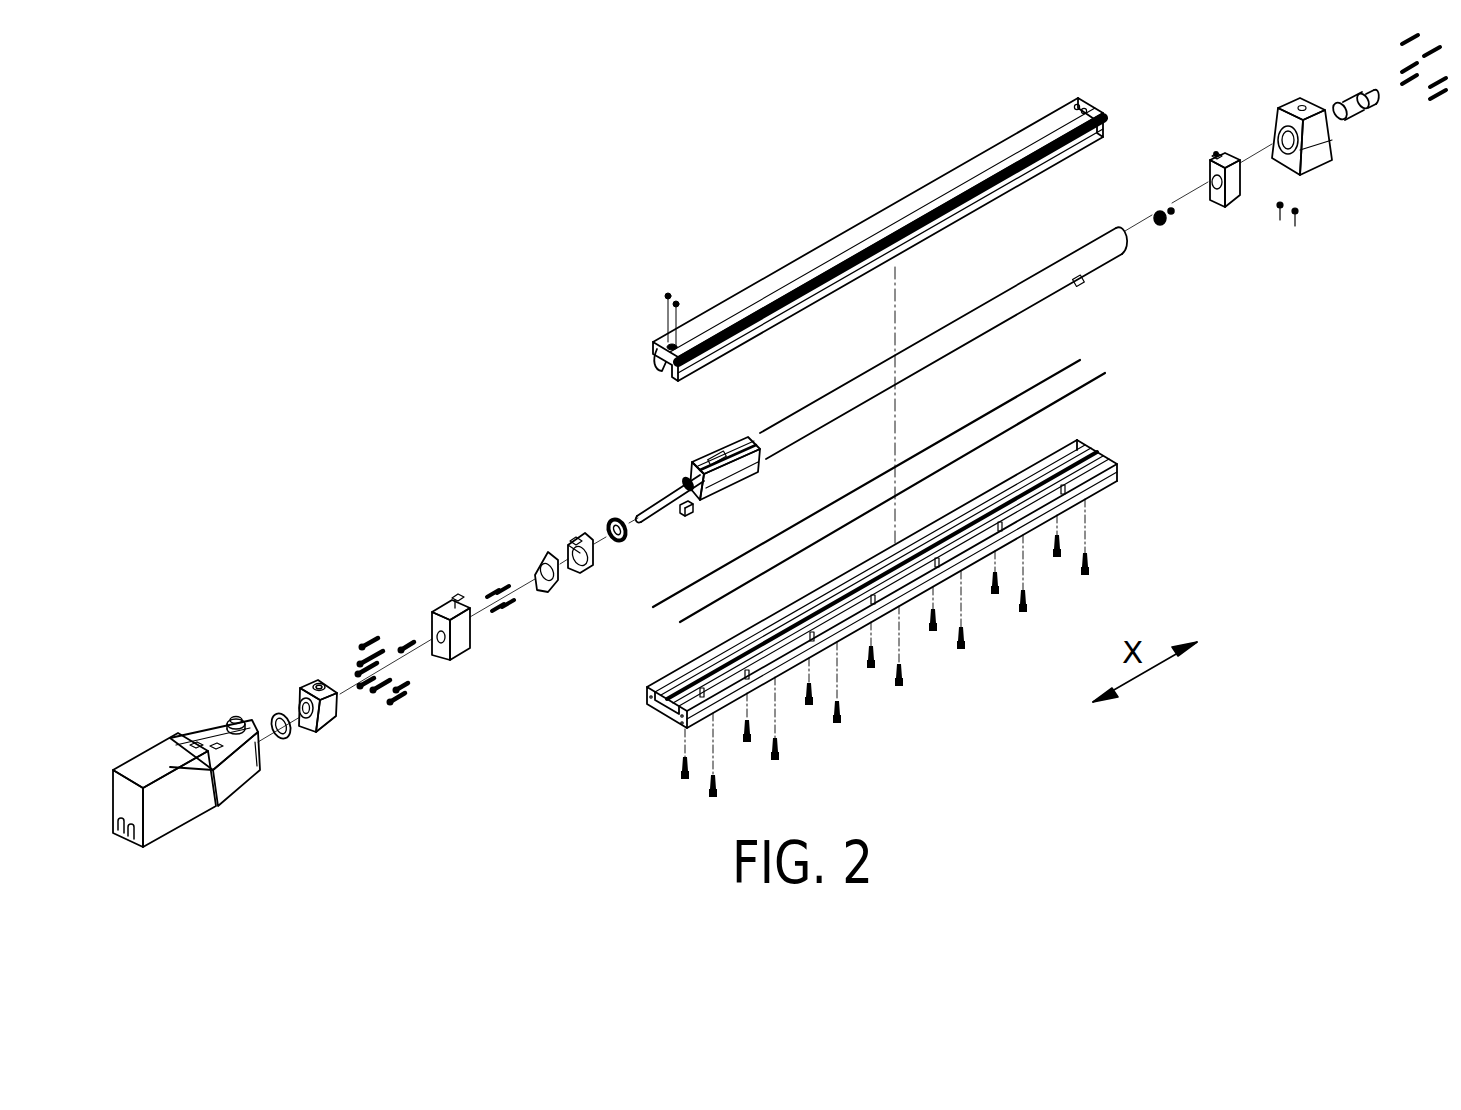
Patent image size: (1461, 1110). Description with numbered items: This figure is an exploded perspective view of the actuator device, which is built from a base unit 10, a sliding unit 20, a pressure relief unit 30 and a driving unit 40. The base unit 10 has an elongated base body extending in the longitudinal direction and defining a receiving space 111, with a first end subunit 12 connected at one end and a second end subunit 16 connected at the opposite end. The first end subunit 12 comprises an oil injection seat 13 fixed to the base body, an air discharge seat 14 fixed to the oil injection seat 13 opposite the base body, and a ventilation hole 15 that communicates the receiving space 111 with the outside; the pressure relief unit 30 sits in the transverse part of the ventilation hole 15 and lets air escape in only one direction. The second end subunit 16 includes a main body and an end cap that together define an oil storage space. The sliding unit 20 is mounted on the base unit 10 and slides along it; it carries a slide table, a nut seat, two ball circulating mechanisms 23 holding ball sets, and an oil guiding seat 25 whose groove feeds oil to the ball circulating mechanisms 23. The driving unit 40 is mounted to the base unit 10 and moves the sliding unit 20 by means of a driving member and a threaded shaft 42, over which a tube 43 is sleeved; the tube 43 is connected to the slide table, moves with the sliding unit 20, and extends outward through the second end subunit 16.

The base unit 10 is at (1118, 496).
The receiving space 111 is at (666, 372).
The tube 43 is at (1030, 292).
The sliding unit 20 is at (752, 432).
The ball circulating mechanisms 23 is at (712, 496).
The threaded shaft 42 is at (677, 492).
The oil guiding seat 25 is at (578, 540).
The oil injection seat 13 is at (457, 648).
The air discharge seat 14 is at (326, 712).
The ventilation hole 15 is at (318, 685).
The driving unit 40 is at (184, 834).
The first end subunit 12 is at (246, 792).
The pressure relief unit 30 is at (228, 702).
The second end subunit 16 is at (1323, 175).